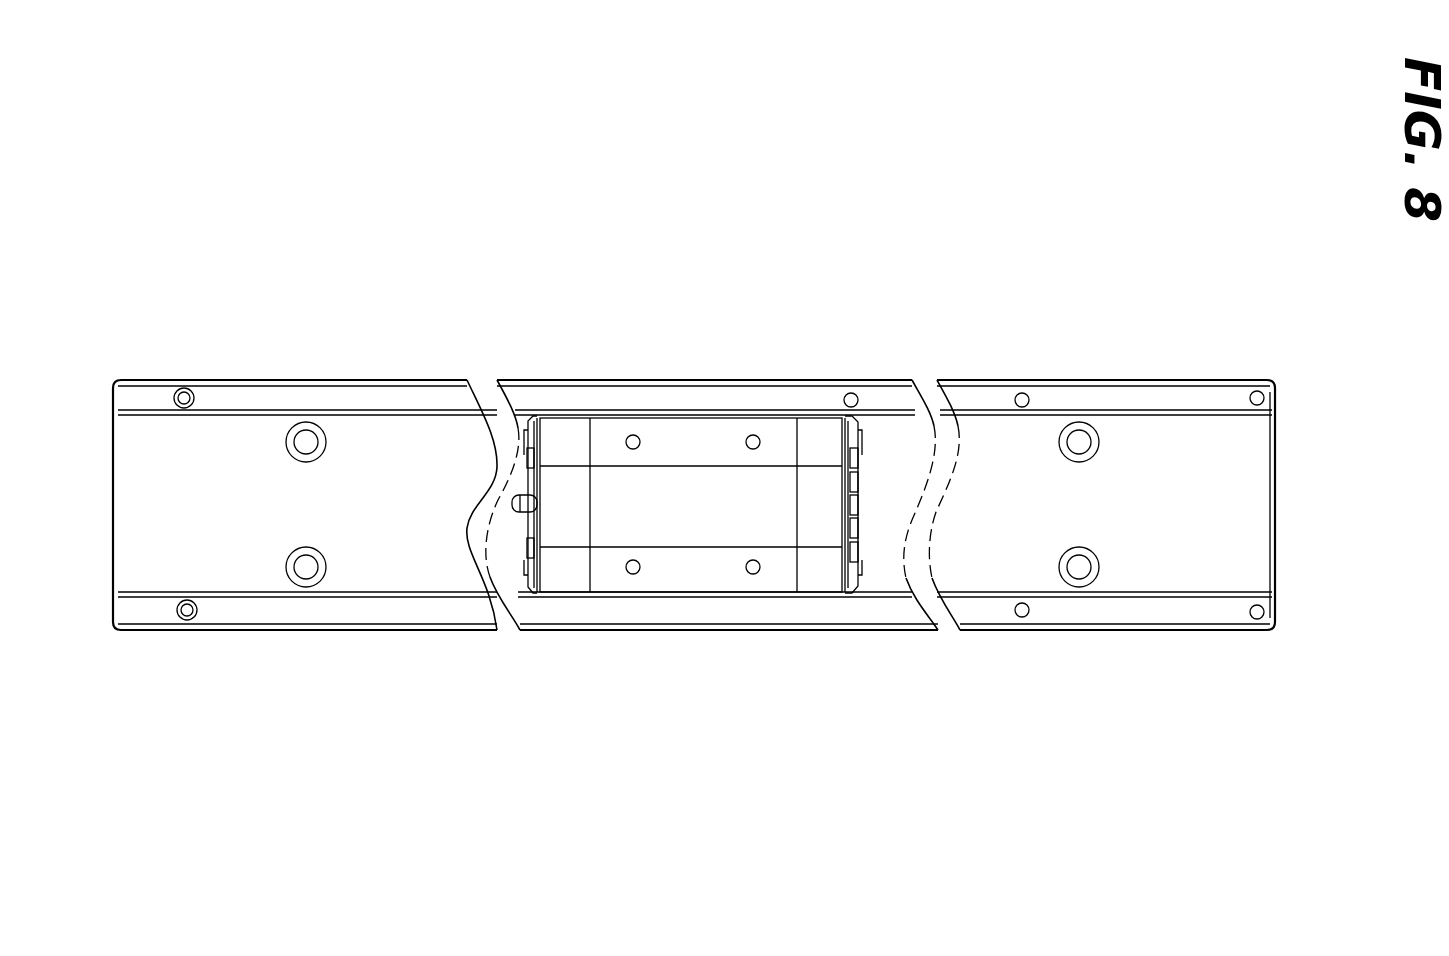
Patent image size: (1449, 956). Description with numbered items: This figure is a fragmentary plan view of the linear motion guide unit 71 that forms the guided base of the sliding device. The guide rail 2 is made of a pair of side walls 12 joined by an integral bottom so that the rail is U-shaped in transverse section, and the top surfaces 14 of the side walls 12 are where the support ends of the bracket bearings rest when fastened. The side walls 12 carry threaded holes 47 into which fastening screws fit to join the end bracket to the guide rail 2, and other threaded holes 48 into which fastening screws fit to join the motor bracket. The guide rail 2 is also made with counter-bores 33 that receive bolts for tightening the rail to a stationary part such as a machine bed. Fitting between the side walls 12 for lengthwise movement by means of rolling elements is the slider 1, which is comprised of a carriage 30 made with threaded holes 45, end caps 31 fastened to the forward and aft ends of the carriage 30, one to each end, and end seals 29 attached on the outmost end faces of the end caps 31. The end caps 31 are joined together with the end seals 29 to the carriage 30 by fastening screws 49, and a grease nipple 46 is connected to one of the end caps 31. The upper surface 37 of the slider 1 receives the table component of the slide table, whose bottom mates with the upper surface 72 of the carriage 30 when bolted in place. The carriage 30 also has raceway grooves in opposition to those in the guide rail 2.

The slider 1 is at (659, 518).
The guide rail 2 is at (1107, 502).
The side wall 12 is at (1117, 397).
The top surface 14 is at (1188, 397).
The end seal 29 is at (532, 577).
The carriage 30 is at (702, 577).
The end cap 31 is at (570, 578).
The counter-bore 33 is at (302, 566).
The upper surface of the slider 37 is at (727, 575).
The threaded hole 45 is at (753, 444).
The grease nipple 46 is at (518, 513).
The threaded hole 47 is at (183, 388).
The threaded hole 48 is at (1025, 394).
The fastening screw 49 is at (521, 458).
The linear motion guide unit 71 is at (840, 377).
The upper surface of the carriage 72 is at (660, 445).